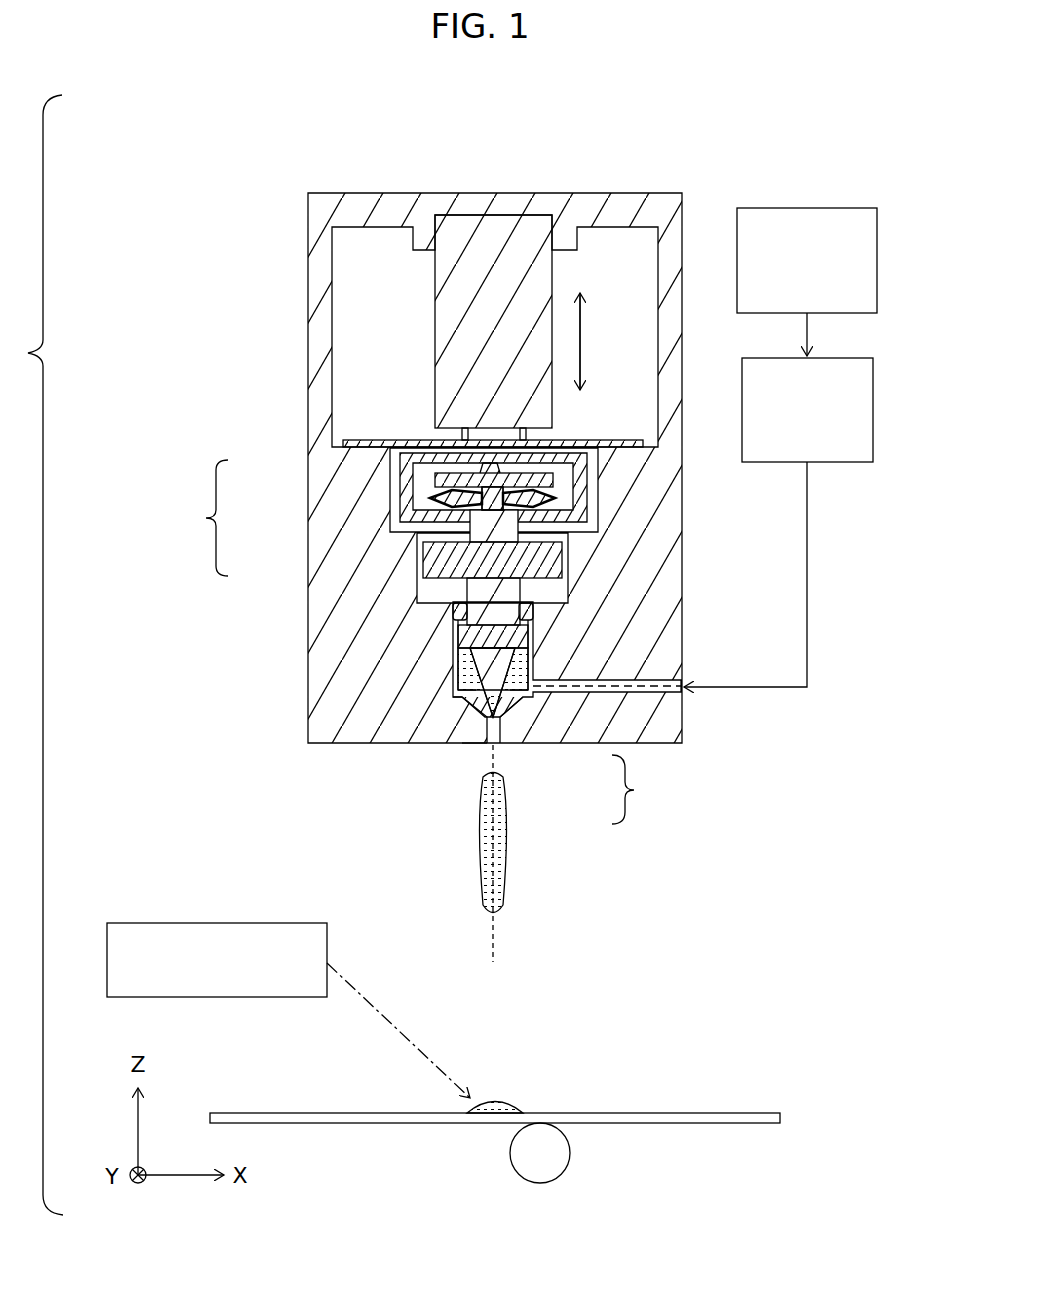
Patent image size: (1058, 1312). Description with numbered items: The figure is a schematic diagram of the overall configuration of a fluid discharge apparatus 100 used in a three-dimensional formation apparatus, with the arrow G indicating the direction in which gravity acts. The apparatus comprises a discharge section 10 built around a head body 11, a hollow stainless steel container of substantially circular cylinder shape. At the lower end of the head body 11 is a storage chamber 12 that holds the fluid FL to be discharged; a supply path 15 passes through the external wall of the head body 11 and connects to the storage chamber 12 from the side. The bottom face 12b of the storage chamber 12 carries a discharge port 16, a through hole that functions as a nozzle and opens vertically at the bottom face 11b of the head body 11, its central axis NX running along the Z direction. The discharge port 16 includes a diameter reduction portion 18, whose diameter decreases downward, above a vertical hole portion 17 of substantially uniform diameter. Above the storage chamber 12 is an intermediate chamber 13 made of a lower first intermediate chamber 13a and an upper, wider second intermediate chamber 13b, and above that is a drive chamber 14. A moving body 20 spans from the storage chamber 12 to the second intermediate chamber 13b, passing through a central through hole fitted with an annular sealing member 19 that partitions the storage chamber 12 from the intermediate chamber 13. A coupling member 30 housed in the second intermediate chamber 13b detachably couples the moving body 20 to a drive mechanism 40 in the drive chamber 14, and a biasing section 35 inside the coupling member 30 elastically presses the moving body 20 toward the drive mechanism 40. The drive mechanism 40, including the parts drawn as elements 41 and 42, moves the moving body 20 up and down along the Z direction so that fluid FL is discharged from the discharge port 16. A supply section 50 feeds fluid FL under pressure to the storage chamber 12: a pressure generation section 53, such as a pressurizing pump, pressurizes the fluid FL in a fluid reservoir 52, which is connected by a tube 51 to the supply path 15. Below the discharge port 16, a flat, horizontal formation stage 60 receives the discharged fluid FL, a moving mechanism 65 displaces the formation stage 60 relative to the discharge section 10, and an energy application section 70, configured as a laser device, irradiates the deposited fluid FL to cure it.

The fluid discharge apparatus 100 is at (203, 168).
The discharge section 10 is at (268, 235).
The head body 11 is at (590, 193).
The bottom face of the head body 11b is at (480, 745).
The storage chamber 12 is at (381, 708).
The bottom face of the storage chamber 12b is at (462, 697).
The intermediate chamber 13 is at (449, 519).
The first intermediate chamber 13a is at (417, 590).
The second intermediate chamber 13b is at (477, 495).
The drive chamber 14 is at (372, 268).
The supply path 15 is at (627, 680).
The discharge port 16 is at (564, 760).
The vertical hole portion 17 is at (500, 735).
The diameter reduction portion 18 is at (515, 705).
The sealing member 19 is at (455, 617).
The moving body 20 is at (565, 590).
The coupling member 30 is at (585, 476).
The biasing section 35 is at (557, 504).
The drive mechanism 40 is at (491, 331).
The piezoelectric actuator 41 is at (448, 378).
The base plate 42 is at (406, 442).
The supply section 50 is at (802, 397).
The tube 51 is at (808, 518).
The fluid reservoir 52 is at (845, 358).
The pressure generation section 53 is at (848, 208).
The formation stage 60 is at (740, 1113).
The moving mechanism 65 is at (550, 1168).
The energy application section 70 is at (195, 923).
The fluid FL is at (533, 655).
The central axis of the discharge port NX is at (495, 932).
The gravity direction arrow G is at (668, 958).